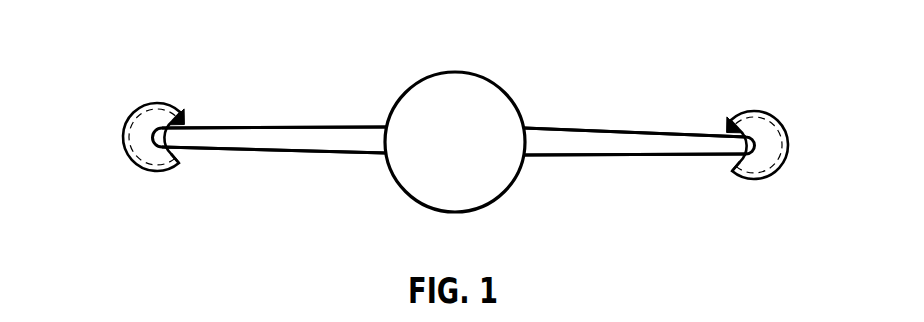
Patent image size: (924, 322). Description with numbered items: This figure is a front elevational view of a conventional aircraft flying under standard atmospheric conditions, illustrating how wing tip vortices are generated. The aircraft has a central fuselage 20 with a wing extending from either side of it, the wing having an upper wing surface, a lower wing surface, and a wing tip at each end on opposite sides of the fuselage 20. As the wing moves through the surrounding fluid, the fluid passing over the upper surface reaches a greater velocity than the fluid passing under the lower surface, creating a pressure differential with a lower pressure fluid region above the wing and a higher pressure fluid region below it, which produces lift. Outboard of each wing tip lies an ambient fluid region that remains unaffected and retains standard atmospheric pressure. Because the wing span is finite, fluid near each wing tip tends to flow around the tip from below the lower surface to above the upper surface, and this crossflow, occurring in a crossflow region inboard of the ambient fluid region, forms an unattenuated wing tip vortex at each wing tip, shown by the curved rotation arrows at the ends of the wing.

The central fuselage 20 is at (468, 72).